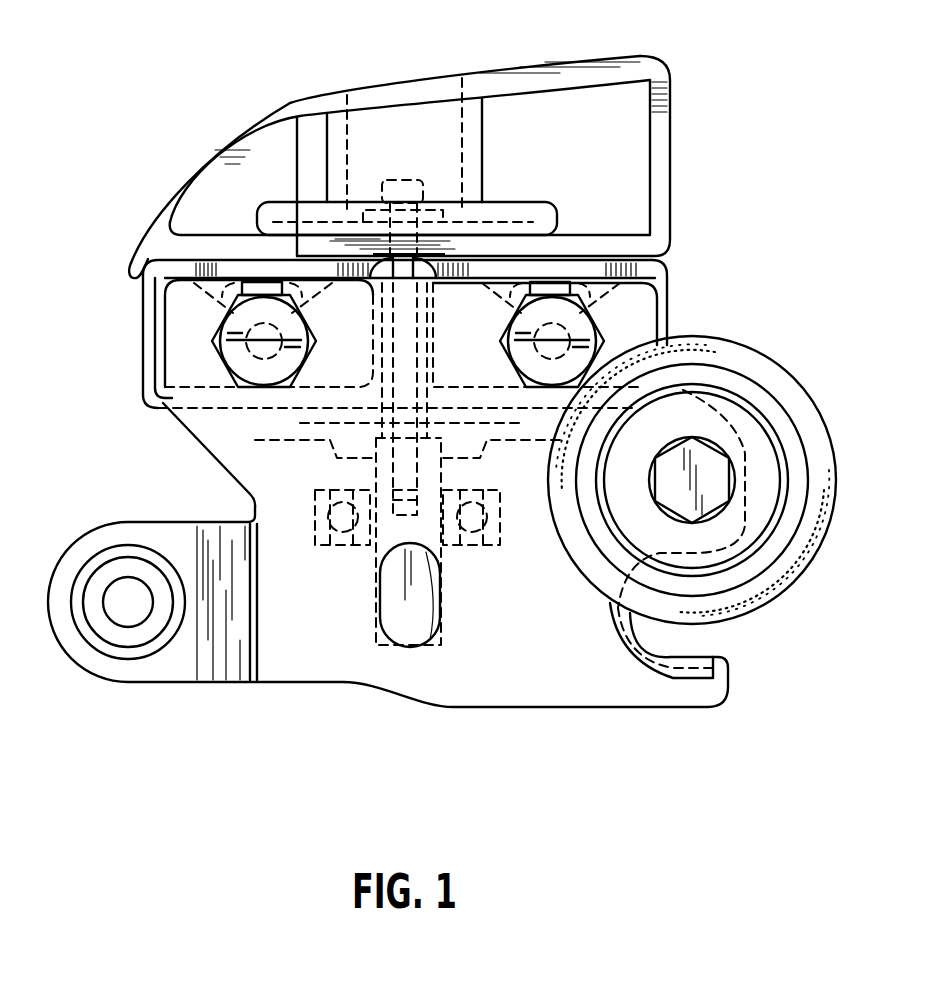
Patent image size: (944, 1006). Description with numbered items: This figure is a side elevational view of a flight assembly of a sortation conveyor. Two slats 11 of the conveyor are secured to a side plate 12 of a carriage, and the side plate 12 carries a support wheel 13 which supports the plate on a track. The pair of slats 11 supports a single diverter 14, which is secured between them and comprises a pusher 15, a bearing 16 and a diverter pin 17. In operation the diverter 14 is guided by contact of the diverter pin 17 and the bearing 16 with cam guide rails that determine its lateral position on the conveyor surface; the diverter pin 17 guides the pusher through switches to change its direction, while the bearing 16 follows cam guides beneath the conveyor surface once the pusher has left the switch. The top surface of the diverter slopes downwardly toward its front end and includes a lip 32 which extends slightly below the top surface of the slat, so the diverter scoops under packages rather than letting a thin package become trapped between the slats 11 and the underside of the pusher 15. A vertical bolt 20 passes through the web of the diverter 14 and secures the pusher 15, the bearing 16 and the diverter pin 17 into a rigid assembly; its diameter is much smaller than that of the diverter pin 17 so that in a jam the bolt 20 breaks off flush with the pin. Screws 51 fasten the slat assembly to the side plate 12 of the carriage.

The slats 11 is at (147, 305).
The side plate 12 is at (537, 683).
The support wheel 13 is at (817, 542).
The diverter 14 is at (690, 112).
The pusher 15 is at (518, 77).
The bearing 16 is at (328, 520).
The diverter pin 17 is at (375, 646).
The vertical bolt 20 is at (400, 413).
The lip 32 is at (133, 250).
The screws 51 is at (235, 363).